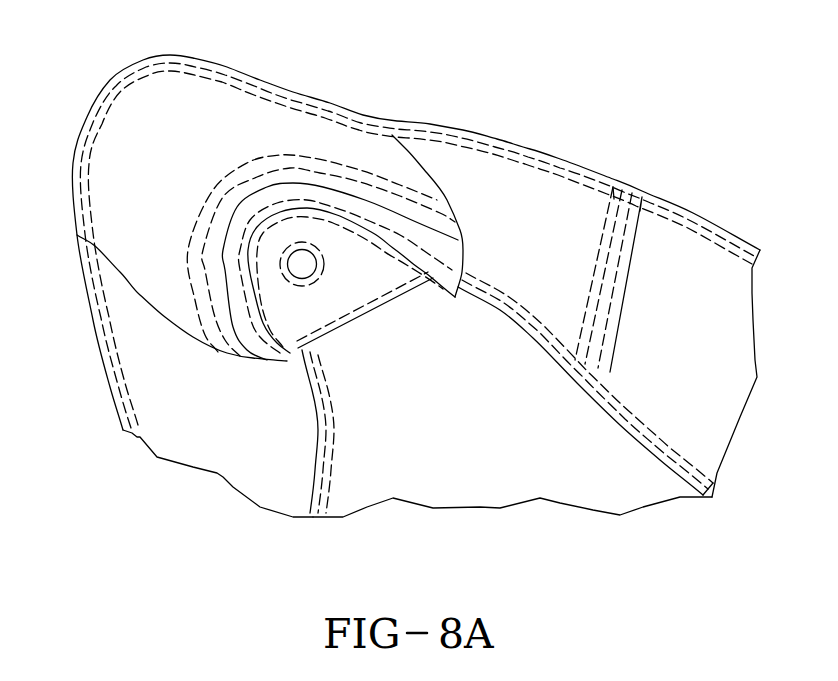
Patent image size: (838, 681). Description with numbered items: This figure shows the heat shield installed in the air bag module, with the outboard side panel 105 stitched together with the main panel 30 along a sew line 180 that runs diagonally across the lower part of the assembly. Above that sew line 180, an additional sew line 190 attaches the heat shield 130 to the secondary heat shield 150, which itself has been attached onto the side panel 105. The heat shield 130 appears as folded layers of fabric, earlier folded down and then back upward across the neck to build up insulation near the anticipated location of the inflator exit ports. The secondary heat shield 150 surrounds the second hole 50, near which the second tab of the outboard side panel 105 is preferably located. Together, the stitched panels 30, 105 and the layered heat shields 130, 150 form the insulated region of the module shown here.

The main panel 30 is at (690, 356).
The second hole 50 is at (288, 267).
The outboard side panel 105 is at (467, 444).
The heat shield 130 is at (154, 181).
The secondary heat shield 150 is at (379, 284).
The sew line 180 is at (680, 446).
The additional sew line 190 is at (390, 252).